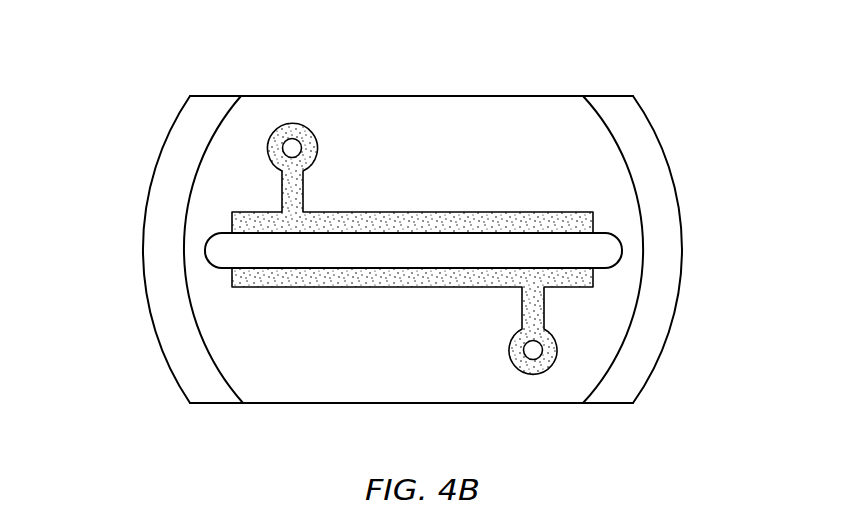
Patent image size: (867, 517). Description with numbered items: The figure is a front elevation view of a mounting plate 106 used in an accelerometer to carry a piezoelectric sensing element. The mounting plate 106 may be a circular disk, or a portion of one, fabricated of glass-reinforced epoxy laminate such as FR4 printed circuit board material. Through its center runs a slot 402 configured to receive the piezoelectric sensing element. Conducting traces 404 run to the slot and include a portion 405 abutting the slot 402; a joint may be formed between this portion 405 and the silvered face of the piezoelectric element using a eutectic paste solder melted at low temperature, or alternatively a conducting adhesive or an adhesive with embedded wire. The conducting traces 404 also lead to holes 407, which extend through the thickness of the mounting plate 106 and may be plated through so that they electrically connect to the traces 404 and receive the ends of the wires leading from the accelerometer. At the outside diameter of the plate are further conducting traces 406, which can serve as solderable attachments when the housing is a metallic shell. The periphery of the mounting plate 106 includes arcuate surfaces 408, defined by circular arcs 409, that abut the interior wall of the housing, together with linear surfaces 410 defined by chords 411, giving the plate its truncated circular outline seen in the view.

The mounting plate 106 is at (176, 77).
The slot 402 is at (610, 248).
The conducting traces 404 is at (287, 124).
The portion 405 is at (448, 215).
The conducting traces 406 is at (632, 123).
The holes 407 is at (287, 147).
The arcuate surfaces 408 is at (688, 222).
The circular arcs 409 is at (672, 168).
The linear surfaces 410 is at (361, 95).
The chords 411 is at (453, 96).